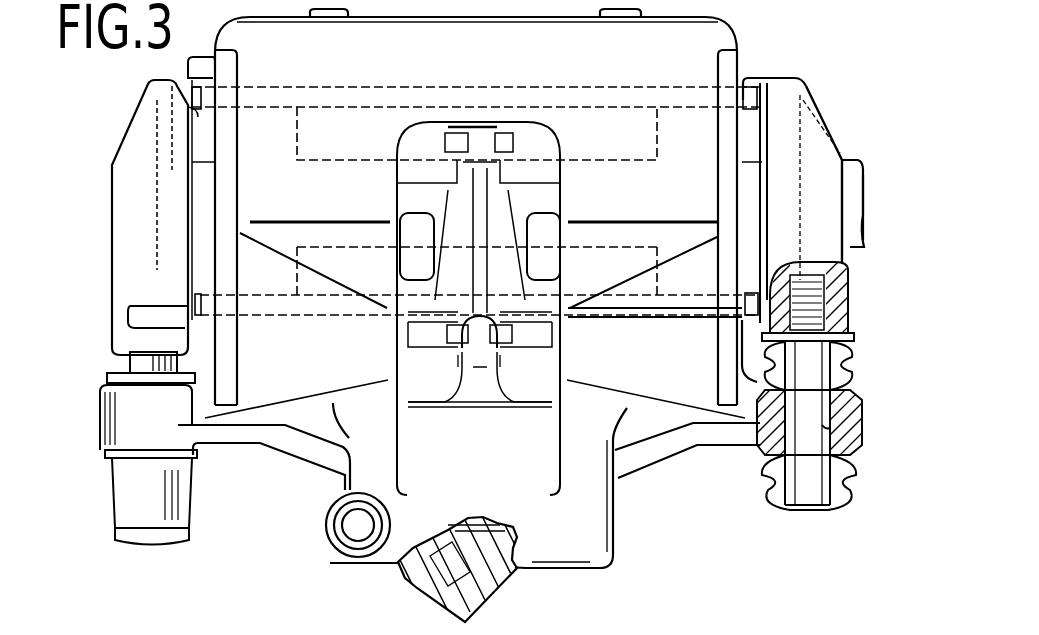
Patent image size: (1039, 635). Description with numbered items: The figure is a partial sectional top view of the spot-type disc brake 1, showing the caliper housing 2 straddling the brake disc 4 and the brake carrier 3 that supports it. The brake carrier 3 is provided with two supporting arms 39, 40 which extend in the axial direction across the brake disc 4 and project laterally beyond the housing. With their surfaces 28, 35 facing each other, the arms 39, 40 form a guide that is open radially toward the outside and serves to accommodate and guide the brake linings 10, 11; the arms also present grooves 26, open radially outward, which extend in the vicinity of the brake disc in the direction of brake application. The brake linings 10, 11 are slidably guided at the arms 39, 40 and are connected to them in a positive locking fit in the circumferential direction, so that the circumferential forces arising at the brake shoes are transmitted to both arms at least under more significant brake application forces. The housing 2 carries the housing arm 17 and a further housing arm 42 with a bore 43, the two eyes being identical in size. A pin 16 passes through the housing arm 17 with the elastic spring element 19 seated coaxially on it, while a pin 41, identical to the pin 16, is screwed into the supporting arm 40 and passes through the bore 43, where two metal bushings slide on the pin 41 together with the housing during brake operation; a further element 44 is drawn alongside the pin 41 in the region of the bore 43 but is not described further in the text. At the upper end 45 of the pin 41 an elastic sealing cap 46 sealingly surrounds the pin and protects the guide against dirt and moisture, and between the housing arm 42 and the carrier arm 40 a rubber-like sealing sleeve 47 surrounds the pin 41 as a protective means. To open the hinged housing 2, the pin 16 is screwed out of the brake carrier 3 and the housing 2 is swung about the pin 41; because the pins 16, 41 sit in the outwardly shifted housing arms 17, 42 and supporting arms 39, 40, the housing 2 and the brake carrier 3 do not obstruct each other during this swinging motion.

The spot-type disc brake 1 is at (878, 182).
The caliper housing 2 is at (633, 552).
The brake carrier 3 is at (100, 205).
The brake disc 4 is at (857, 232).
The brake lining 10 is at (360, 280).
The brake lining 11 is at (418, 130).
The pin 16 is at (138, 363).
The housing arm 17 is at (125, 403).
The elastic spring element 19 is at (133, 487).
The grooves 26 is at (760, 118).
The surface 28 is at (160, 100).
The surface 35 is at (748, 118).
The supporting arm 39 is at (127, 155).
The supporting arm 40 is at (823, 155).
The pin 41 is at (812, 397).
The housing arm 42 is at (853, 428).
The bore 43 is at (860, 447).
The upper bellows 44 is at (858, 413).
The upper end 45 is at (823, 512).
The elastic sealing cap 46 is at (848, 510).
The sealing sleeve 47 is at (858, 336).